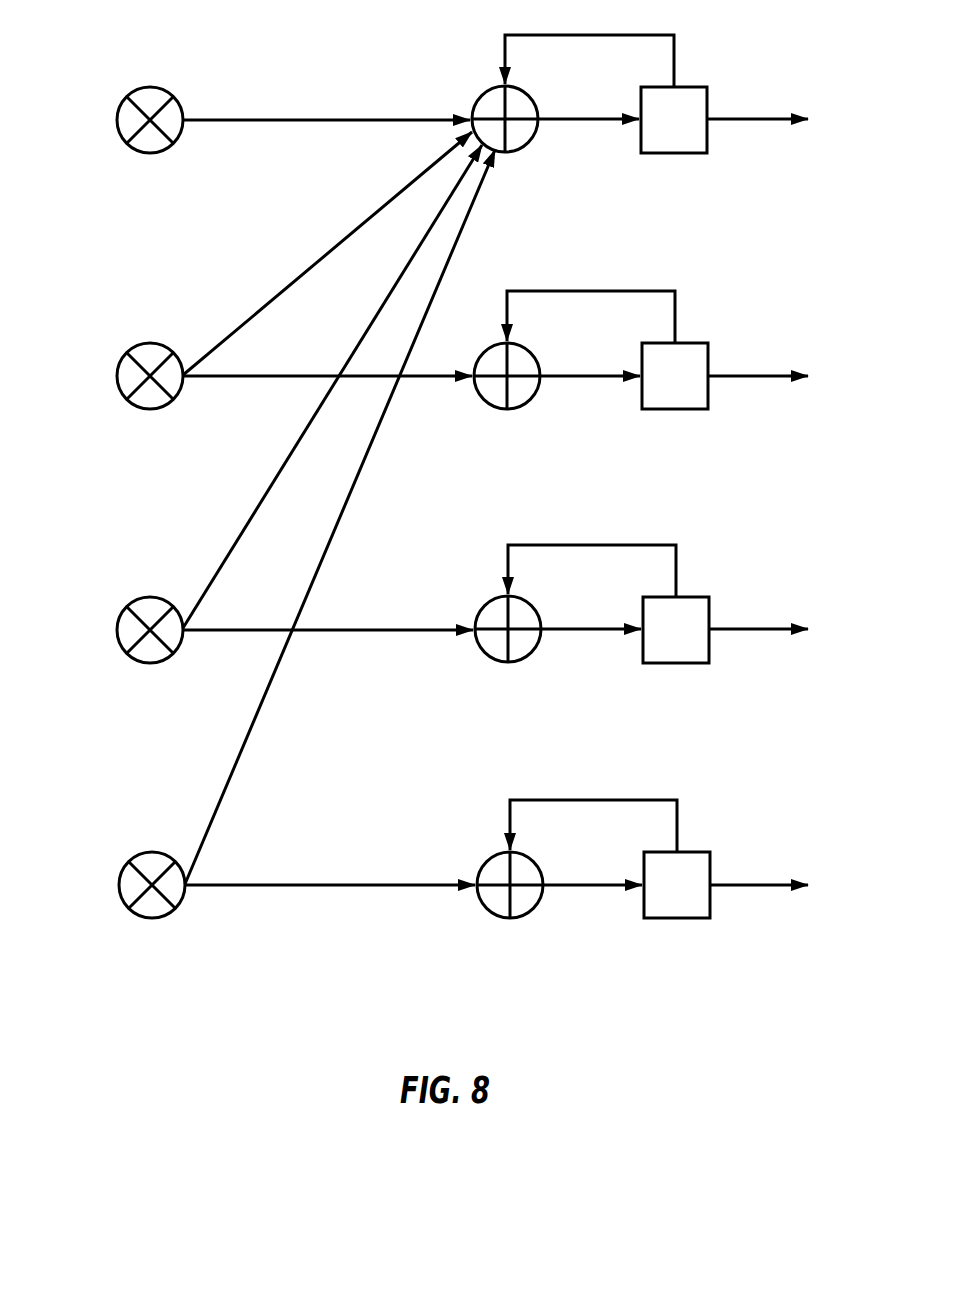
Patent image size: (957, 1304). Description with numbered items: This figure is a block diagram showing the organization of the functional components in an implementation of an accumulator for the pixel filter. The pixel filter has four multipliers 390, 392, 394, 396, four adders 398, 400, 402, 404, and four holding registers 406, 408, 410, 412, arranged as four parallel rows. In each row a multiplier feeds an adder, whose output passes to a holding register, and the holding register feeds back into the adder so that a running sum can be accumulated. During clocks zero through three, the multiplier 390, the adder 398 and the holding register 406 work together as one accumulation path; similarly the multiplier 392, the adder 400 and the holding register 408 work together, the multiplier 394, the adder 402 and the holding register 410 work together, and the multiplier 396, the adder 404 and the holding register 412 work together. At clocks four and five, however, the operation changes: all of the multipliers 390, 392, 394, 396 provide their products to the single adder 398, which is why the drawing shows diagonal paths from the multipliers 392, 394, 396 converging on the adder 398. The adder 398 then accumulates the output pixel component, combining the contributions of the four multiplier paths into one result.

The multiplier 390 is at (149, 87).
The multiplier 392 is at (150, 343).
The multiplier 394 is at (150, 597).
The multiplier 396 is at (152, 852).
The adder 398 is at (530, 97).
The adder 400 is at (532, 354).
The adder 402 is at (533, 607).
The adder 404 is at (535, 863).
The holding register 406 is at (713, 60).
The holding register 408 is at (715, 315).
The holding register 410 is at (716, 570).
The holding register 412 is at (718, 825).